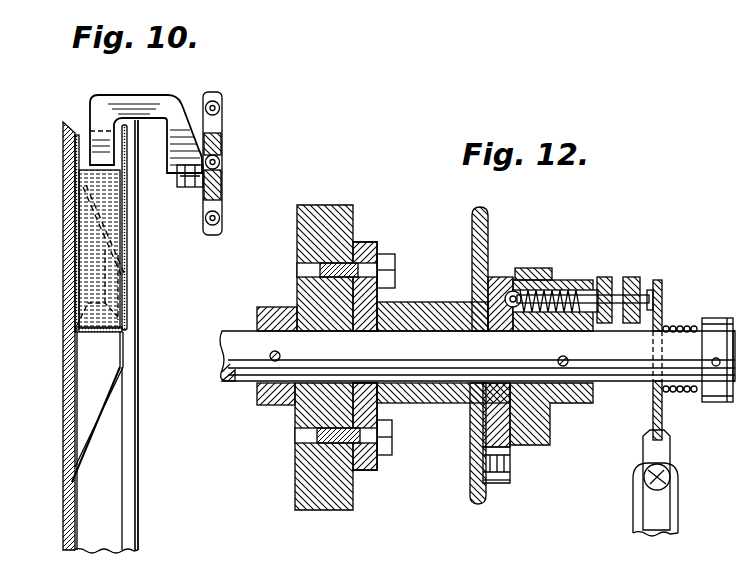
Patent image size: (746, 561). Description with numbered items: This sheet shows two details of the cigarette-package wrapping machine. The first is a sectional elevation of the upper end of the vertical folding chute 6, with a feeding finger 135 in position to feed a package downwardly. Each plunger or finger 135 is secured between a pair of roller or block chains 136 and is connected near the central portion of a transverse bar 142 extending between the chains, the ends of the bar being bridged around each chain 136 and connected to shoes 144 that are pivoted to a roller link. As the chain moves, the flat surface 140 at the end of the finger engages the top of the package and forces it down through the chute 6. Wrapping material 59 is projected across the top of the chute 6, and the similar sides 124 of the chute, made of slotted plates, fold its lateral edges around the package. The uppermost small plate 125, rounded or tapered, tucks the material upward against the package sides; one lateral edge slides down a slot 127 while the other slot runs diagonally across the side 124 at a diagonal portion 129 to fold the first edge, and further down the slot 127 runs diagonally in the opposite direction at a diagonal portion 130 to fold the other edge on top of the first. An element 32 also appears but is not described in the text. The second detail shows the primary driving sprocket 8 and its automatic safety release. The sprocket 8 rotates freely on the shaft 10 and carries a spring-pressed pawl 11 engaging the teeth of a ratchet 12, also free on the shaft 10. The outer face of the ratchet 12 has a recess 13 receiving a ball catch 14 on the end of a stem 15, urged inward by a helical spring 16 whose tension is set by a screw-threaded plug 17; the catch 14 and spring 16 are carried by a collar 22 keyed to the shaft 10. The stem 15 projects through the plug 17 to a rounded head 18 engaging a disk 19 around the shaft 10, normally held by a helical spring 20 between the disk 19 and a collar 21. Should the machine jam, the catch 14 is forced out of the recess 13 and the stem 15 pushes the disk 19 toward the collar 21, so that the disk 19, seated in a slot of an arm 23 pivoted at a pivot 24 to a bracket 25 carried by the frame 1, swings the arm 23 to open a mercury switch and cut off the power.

In FIG. 12, the frame 1 is at (326, 206).
In FIG. 10, the folding chute 6 is at (146, 316).
In FIG. 12, the sprocket 8 is at (472, 245).
In FIG. 12, the shaft 10 is at (237, 340).
In FIG. 12, the pawl 11 is at (497, 482).
In FIG. 12, the ratchet 12 is at (497, 290).
In FIG. 12, the recess 13 is at (515, 290).
In FIG. 12, the ball catch 14 is at (546, 265).
In FIG. 12, the stem 15 is at (602, 292).
In FIG. 12, the helical spring 16 is at (568, 288).
In FIG. 12, the screw-threaded plug 17 is at (632, 278).
In FIG. 12, the rounded head 18 is at (652, 289).
In FIG. 12, the disk 19 is at (662, 302).
In FIG. 12, the helical spring 20 is at (670, 328).
In FIG. 12, the collar 21 is at (722, 313).
In FIG. 12, the collar 22 is at (538, 446).
In FIG. 12, the arm 23 is at (672, 446).
In FIG. 12, the pivot 24 is at (671, 477).
In FIG. 12, the bracket 25 is at (680, 509).
In FIG. 10, the casing wall 32 is at (63, 262).
In FIG. 10, the wrapping material 59 is at (136, 260).
In FIG. 10, the sides 124 is at (82, 383).
In FIG. 10, the plate 125 is at (78, 154).
In FIG. 10, the slot 127 is at (124, 352).
In FIG. 10, the diagonal portion 129 is at (128, 233).
In FIG. 10, the diagonal portion 130 is at (85, 442).
In FIG. 10, the feeding finger 135 is at (136, 101).
In FIG. 10, the chain 136 is at (218, 130).
In FIG. 10, the flat surface 140 is at (90, 166).
In FIG. 10, the transverse bar 142 is at (205, 181).
In FIG. 10, the shoes 144 is at (222, 152).